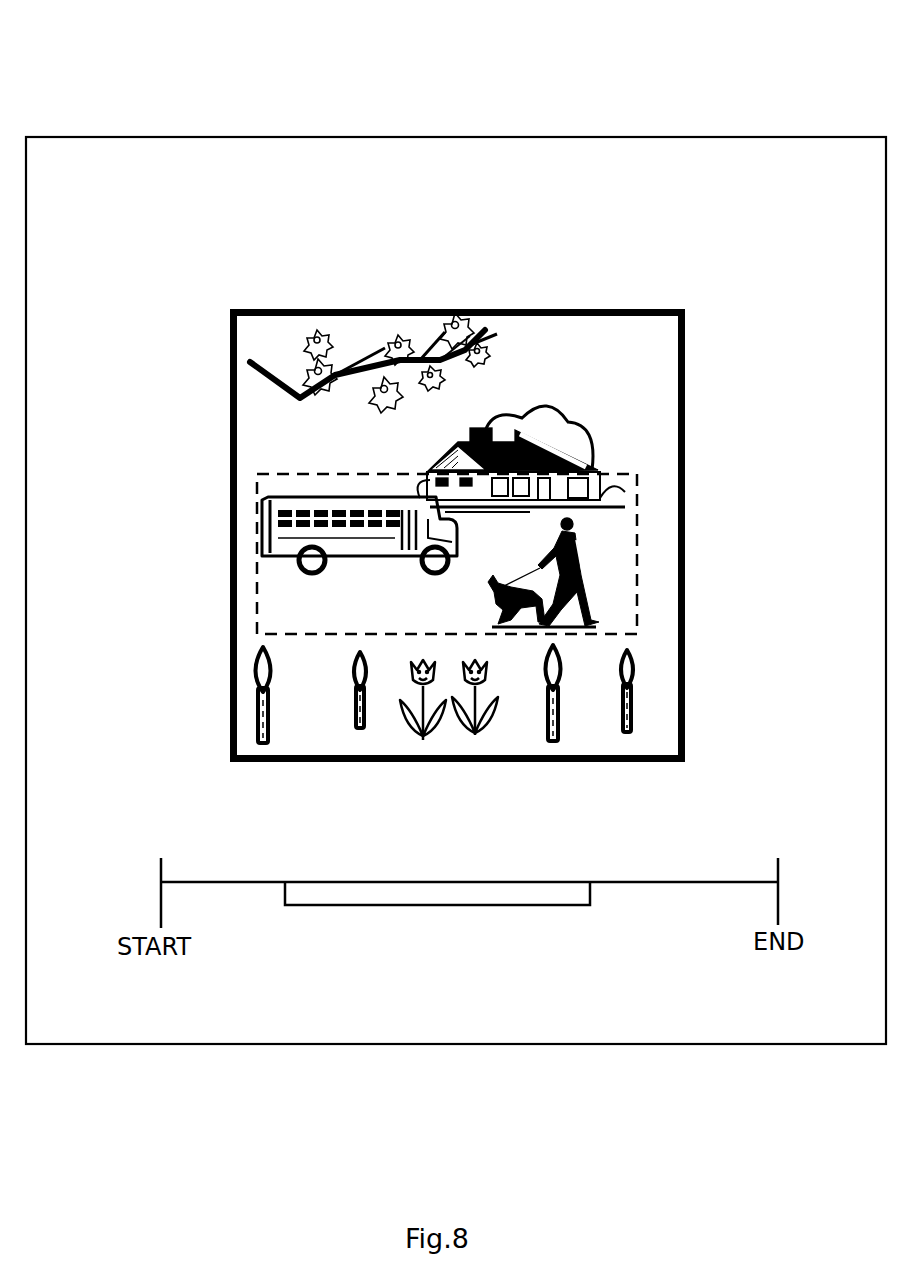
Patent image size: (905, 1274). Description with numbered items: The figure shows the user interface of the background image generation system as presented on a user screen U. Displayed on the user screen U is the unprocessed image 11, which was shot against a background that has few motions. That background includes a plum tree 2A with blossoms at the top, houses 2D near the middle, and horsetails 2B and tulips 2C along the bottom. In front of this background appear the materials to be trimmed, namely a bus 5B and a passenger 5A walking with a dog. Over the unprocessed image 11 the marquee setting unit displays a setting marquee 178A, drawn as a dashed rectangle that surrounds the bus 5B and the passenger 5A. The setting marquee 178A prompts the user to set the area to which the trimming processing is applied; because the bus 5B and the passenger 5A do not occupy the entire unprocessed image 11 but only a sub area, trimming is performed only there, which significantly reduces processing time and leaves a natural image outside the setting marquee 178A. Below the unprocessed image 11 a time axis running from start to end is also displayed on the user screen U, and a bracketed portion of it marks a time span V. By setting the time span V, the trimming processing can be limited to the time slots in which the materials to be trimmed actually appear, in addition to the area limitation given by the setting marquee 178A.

The user screen U is at (388, 137).
The unprocessed image 11 is at (230, 533).
The setting marquee 178A is at (285, 468).
The plum tree 2A is at (410, 352).
The houses 2D is at (520, 410).
The bus 5B is at (292, 540).
The passenger 5A is at (585, 562).
The horsetails 2B is at (275, 732).
The tulips 2C is at (484, 732).
The time span V is at (590, 928).